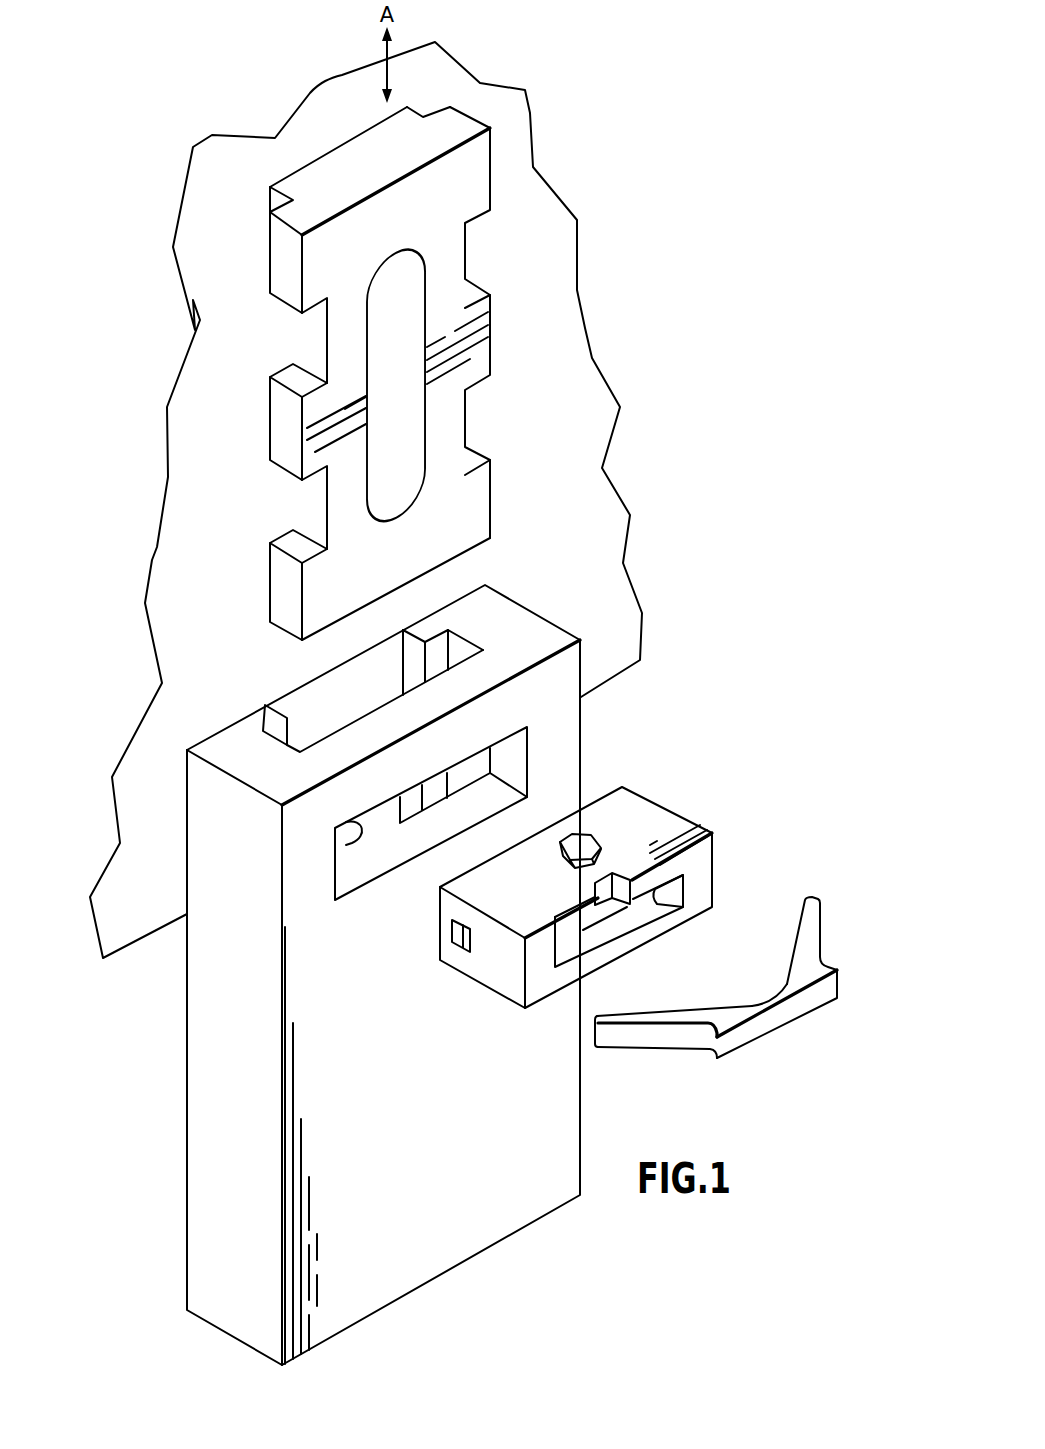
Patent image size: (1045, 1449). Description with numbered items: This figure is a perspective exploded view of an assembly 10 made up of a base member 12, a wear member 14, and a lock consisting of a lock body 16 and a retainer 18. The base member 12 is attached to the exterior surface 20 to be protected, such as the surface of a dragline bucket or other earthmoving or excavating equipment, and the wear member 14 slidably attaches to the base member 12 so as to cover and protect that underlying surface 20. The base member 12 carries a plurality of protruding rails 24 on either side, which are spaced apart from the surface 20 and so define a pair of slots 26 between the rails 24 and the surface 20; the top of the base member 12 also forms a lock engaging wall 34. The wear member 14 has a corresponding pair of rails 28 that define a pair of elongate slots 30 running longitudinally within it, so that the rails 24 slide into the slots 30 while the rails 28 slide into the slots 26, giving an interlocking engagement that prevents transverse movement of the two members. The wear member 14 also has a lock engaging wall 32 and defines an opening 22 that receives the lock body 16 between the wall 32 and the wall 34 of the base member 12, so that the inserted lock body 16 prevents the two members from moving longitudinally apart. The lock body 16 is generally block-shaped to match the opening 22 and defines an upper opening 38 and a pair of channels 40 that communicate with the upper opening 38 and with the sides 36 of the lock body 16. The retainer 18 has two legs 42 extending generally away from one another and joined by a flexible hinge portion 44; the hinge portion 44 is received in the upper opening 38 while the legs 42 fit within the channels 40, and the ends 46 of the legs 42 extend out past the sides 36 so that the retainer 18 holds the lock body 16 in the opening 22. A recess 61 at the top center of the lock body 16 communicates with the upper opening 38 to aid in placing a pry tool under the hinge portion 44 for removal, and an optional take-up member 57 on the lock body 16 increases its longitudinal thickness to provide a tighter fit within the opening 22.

The assembly 10 is at (664, 476).
The base member 12 is at (468, 512).
The wear member 14 is at (565, 740).
The lock body 16 is at (663, 820).
The retainer 18 is at (808, 924).
The surface 20 is at (550, 332).
The opening 22 is at (400, 852).
The rails 24 is at (480, 166).
The slots 26 is at (427, 112).
The rails 28 is at (423, 632).
The elongate slots 30 is at (460, 648).
The lock engaging wall 32 is at (340, 840).
The lock engaging wall 34 is at (360, 158).
The sides 36 is at (487, 972).
The upper opening 38 is at (648, 908).
The channels 40 is at (452, 935).
The legs 42 is at (672, 1043).
The flexible hinge portion 44 is at (792, 1008).
The ends 46 is at (605, 1043).
The take-up member 57 is at (601, 848).
The recess 61 is at (596, 884).